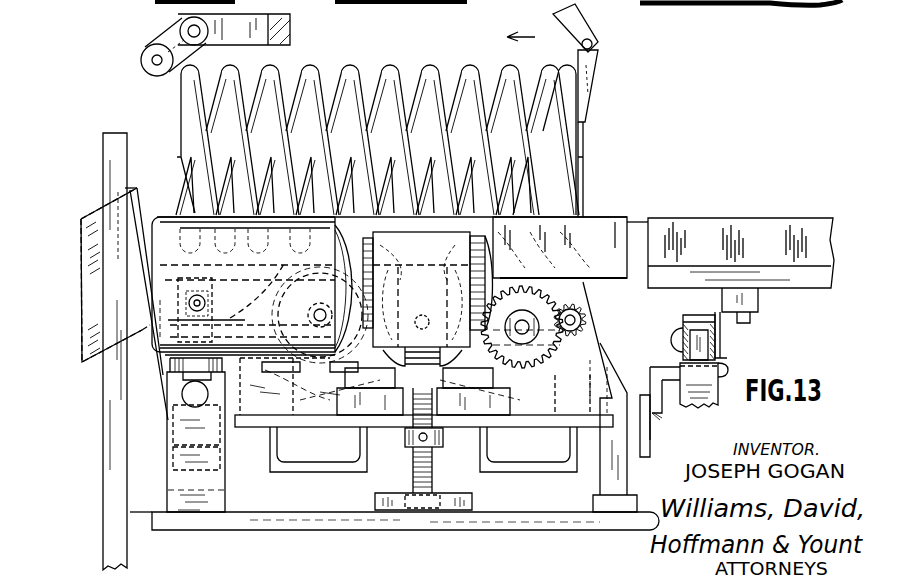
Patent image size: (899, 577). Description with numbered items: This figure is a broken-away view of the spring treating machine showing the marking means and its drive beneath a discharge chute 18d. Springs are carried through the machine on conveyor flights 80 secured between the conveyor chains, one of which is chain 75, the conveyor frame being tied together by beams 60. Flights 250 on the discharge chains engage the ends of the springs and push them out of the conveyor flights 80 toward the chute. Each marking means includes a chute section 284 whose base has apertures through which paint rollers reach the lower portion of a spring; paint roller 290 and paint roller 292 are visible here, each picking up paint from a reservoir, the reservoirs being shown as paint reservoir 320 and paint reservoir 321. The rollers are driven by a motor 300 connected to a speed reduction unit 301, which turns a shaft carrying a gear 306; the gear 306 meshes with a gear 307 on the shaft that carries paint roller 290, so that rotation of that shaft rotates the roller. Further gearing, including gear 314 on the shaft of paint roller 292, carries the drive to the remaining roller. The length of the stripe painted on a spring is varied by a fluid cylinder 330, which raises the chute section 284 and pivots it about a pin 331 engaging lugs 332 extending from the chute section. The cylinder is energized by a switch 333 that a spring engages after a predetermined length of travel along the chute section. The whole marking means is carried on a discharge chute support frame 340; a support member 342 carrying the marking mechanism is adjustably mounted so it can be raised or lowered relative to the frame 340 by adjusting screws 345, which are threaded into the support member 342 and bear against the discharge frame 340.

The discharge chute 18d is at (92, 217).
The switch 333 is at (166, 52).
The flight 250 is at (598, 66).
The speed reduction unit 301 is at (528, 214).
The motor 300 is at (160, 214).
The paint roller 292 is at (207, 298).
The gear 306 is at (412, 252).
The gear 307 is at (565, 292).
The lug 332 is at (588, 320).
The pin 331 is at (590, 346).
The paint reservoir 320 is at (596, 368).
The paint roller 290 is at (584, 251).
The chute section 284 is at (640, 208).
The conveyor flight 80 is at (806, 212).
The chain 75 is at (718, 357).
The beam 60 is at (664, 413).
The gear 314 is at (290, 390).
The paint reservoir 321 is at (229, 407).
The fluid cylinder 330 is at (224, 476).
The discharge chute support frame 340 is at (286, 512).
The support member 342 is at (398, 440).
The adjusting screw 345 is at (432, 478).